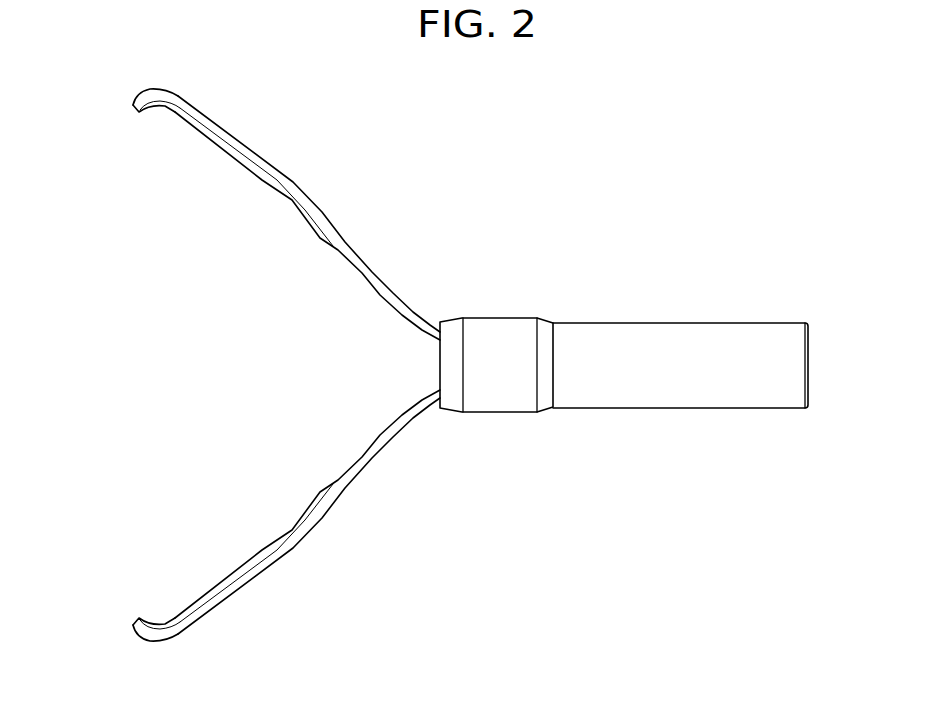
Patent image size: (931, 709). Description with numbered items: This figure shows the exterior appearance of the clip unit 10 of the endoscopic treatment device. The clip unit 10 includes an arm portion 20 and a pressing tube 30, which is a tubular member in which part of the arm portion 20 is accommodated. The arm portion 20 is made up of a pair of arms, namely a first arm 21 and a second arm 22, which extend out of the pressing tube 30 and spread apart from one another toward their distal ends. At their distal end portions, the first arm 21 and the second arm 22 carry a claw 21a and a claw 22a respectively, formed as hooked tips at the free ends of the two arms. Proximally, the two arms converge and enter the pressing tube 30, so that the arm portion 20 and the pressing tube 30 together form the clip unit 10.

The clip unit 10 is at (735, 190).
The arm portion 20 is at (345, 195).
The first arm 21 is at (218, 145).
The claw 21a is at (131, 105).
The second arm 22 is at (233, 573).
The claw 22a is at (131, 622).
The pressing tube 30 is at (652, 330).